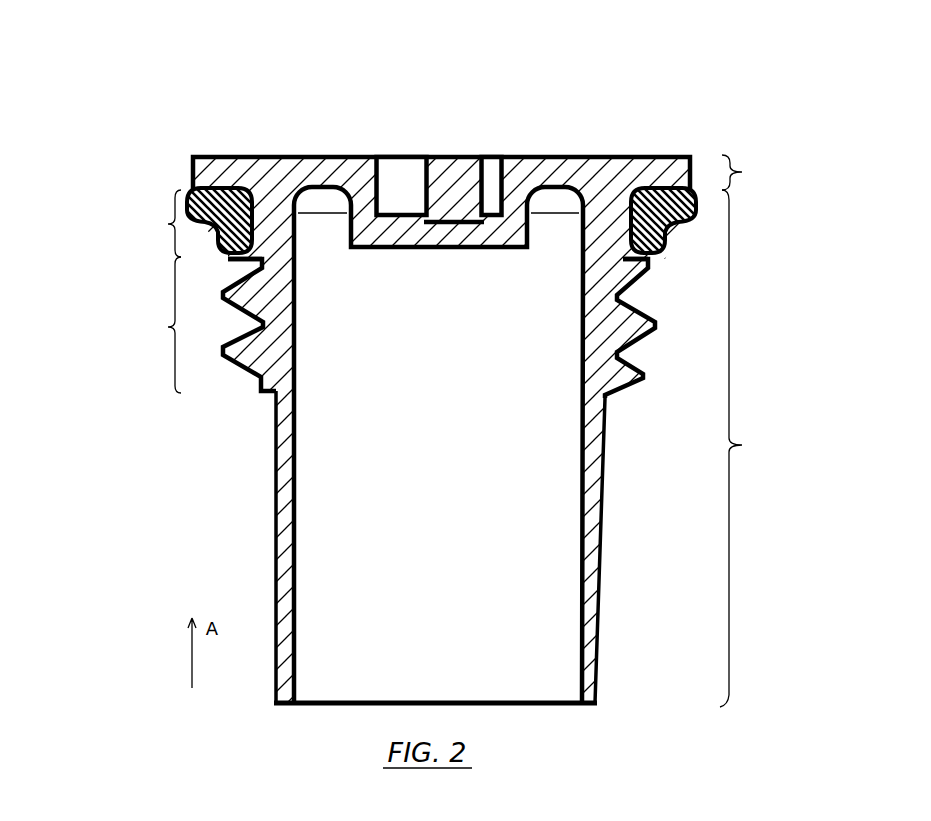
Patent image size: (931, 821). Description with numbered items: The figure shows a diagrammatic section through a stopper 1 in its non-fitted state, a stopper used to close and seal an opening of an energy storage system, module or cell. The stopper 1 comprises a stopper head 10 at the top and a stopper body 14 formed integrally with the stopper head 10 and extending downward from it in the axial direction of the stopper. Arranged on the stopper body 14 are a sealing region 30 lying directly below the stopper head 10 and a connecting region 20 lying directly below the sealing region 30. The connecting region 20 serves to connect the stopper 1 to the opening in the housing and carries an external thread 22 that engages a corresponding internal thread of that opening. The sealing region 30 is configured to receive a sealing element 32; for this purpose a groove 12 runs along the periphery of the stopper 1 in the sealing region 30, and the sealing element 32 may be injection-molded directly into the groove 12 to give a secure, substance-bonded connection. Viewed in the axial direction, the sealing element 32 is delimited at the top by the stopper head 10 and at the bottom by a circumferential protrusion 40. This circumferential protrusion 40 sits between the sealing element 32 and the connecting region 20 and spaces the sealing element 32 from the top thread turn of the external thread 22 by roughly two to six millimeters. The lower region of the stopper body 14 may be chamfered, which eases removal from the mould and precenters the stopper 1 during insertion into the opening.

The stopper 1 is at (452, 357).
The stopper head 10 is at (527, 146).
The groove 12 is at (248, 190).
The stopper body 14 is at (451, 448).
The connecting region 20 is at (350, 361).
The external thread 22 is at (253, 346).
The sealing region 30 is at (371, 152).
The sealing element 32 is at (215, 190).
The circumferential protrusion 40 is at (245, 257).